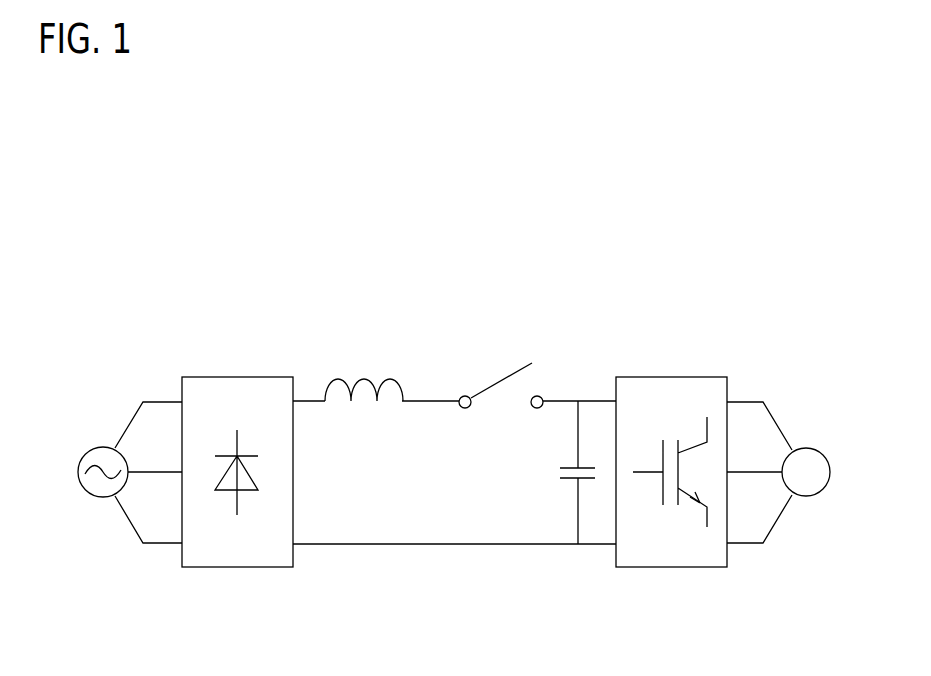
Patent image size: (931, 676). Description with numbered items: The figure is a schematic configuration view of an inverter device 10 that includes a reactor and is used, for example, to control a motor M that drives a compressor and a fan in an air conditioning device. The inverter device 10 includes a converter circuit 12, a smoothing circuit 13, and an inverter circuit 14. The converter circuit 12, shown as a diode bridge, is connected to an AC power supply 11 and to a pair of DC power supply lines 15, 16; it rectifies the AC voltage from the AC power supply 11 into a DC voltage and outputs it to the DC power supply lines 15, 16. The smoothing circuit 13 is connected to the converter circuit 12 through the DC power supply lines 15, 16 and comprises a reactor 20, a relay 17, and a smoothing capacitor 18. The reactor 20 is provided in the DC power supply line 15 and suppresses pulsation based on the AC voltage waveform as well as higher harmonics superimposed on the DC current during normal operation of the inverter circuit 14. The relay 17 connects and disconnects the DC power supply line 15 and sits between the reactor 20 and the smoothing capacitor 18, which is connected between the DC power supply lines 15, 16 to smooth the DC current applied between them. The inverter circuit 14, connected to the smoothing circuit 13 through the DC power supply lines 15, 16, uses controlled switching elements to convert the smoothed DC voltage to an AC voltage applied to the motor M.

The inverter device 10 is at (554, 340).
The AC power supply 11 is at (86, 448).
The converter circuit 12 is at (205, 568).
The smoothing circuit 13 is at (477, 501).
The inverter circuit 14 is at (648, 569).
The DC power supply line 15 is at (308, 399).
The DC power supply line 16 is at (337, 546).
The relay 17 is at (507, 376).
The smoothing capacitor 18 is at (570, 480).
The reactor 20 is at (370, 377).